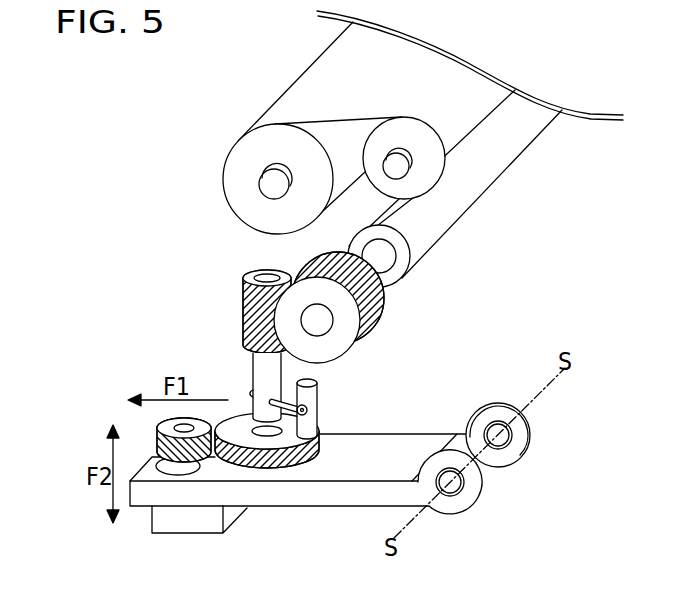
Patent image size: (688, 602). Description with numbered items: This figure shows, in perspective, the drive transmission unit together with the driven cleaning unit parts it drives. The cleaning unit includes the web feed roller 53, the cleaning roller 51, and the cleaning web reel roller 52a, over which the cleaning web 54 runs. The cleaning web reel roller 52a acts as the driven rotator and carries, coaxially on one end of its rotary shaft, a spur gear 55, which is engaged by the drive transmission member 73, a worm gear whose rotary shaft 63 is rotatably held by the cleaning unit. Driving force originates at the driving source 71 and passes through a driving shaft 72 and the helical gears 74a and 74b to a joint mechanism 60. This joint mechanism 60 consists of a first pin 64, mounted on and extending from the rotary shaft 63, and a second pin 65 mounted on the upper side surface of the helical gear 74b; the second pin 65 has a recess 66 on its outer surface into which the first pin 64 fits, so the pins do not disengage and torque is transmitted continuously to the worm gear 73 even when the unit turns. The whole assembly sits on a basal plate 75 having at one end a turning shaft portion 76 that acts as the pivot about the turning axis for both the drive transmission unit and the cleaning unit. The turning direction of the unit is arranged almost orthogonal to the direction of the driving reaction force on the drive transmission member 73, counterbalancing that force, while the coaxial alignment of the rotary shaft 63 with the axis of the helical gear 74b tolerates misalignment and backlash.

The cleaning roller 51 is at (413, 181).
The cleaning web reel roller 52a is at (433, 235).
The web feed roller 53 is at (225, 177).
The cleaning web 54 is at (295, 88).
The spur gear 55 is at (364, 322).
The joint mechanism 60 is at (383, 367).
The rotary shaft 63 is at (253, 378).
The first pin 64 is at (311, 409).
The second pin 65 is at (317, 395).
The recess 66 is at (318, 440).
The driving source 71 is at (197, 534).
The driving shaft 72 is at (180, 468).
The drive transmission member 73 is at (252, 318).
The helical gear 74a is at (205, 452).
The helical gear 74b is at (273, 466).
The basal plate 75 is at (352, 498).
The turning shaft portion 76 is at (483, 497).